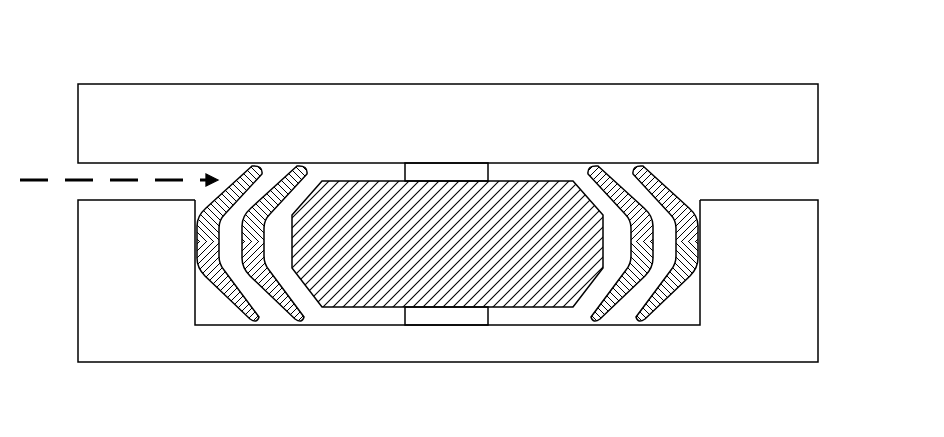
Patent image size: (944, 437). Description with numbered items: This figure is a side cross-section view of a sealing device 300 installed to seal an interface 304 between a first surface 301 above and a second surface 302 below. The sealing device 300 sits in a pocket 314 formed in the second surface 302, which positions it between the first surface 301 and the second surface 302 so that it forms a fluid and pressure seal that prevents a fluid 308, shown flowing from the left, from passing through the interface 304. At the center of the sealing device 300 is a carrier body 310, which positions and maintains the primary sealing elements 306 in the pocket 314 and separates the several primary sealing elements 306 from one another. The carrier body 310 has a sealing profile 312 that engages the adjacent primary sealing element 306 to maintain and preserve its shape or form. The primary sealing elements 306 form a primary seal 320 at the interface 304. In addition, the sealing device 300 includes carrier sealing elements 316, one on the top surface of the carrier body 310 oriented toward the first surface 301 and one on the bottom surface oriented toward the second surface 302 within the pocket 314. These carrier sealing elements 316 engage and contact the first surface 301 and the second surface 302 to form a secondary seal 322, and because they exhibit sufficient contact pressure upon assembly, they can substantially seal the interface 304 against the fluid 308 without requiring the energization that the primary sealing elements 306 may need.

The sealing device 300 is at (790, 50).
The first surface 301 is at (448, 99).
The second surface 302 is at (480, 281).
The interface 304 is at (800, 177).
The primary sealing element 306 is at (243, 95).
The fluid 308 is at (40, 177).
The carrier body 310 is at (472, 190).
The sealing profile 312 is at (313, 165).
The pocket 314 is at (740, 318).
The carrier sealing element 316 is at (454, 195).
The primary seal 320 is at (662, 145).
The secondary seal 322 is at (440, 148).